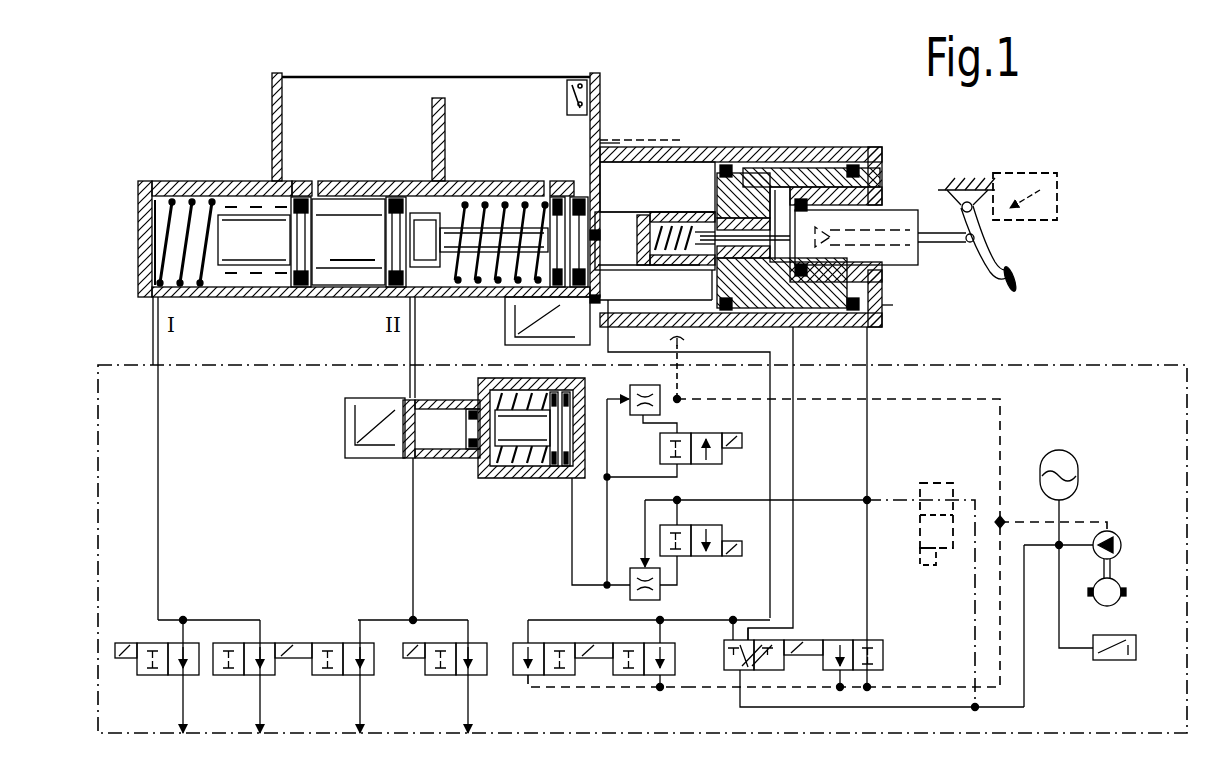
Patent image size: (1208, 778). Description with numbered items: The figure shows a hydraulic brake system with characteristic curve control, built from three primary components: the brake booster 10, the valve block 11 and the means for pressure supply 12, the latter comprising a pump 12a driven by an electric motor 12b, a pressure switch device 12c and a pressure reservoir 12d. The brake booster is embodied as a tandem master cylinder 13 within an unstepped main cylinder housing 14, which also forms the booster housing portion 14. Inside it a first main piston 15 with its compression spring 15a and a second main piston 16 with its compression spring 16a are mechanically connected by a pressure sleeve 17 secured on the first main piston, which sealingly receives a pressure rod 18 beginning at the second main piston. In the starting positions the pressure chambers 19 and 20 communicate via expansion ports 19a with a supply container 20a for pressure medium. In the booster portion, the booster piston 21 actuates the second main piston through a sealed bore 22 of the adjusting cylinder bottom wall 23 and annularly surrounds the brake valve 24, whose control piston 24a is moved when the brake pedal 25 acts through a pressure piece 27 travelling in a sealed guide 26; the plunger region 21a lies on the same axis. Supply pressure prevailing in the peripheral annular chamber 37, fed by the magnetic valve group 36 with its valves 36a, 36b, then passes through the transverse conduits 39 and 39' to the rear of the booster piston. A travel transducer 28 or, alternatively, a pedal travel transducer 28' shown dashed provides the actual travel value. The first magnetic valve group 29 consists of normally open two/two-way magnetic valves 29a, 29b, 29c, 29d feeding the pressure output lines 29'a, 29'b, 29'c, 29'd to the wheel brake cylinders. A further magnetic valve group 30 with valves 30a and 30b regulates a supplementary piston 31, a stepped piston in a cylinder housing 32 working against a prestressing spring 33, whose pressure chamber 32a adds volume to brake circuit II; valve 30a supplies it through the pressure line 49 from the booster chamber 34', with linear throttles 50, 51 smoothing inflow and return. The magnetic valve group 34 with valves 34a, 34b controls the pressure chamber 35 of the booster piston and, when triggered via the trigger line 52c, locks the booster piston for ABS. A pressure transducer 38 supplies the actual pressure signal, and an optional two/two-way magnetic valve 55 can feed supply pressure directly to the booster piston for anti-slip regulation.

The brake booster 10 is at (778, 182).
The valve block 11 is at (136, 362).
The means for pressure supply 12 is at (1097, 564).
The pump 12a is at (1118, 533).
The electric motor 12b is at (1120, 600).
The pressure switch device 12c is at (1118, 665).
The pressure reservoir 12d is at (1058, 460).
The tandem master cylinder 13 is at (453, 123).
The main cylinder housing 14 is at (777, 142).
The first main piston 15 is at (335, 223).
The compression spring 15a is at (210, 222).
The second main piston 16 is at (563, 187).
The compression spring 16a is at (486, 205).
The pressure sleeve 17 is at (428, 213).
The pressure rod 18 is at (526, 236).
The pressure chamber 19 is at (165, 213).
The expansion ports 19a is at (320, 187).
The pressure chamber 20 is at (508, 200).
The supply container 20a is at (357, 105).
The booster piston 21 is at (840, 173).
The plunger 21a is at (633, 223).
The sealed bore 22 is at (630, 220).
The adjusting cylinder bottom wall 23 is at (607, 193).
The brake valve 24 is at (753, 170).
The control piston 24a is at (812, 168).
The brake pedal 25 is at (982, 265).
The sealed guide 26 is at (826, 193).
The pressure piece 27 is at (897, 222).
The travel transducer 28 is at (530, 321).
The pedal travel transducer 28' is at (1025, 160).
The first magnetic valve group 29 is at (318, 663).
The 2/2-way magnetic valve 29a is at (155, 643).
The 2/2-way magnetic valve 29b is at (236, 643).
The 2/2-way magnetic valve 29c is at (340, 643).
The 2/2-way magnetic valve 29d is at (447, 643).
The pressure output line 29'a is at (154, 676).
The pressure output line 29'b is at (232, 676).
The pressure output line 29'c is at (389, 676).
The pressure output line 29'd is at (500, 676).
The magnetic valve group 30 is at (687, 502).
The magnetic valve 30a is at (700, 557).
The magnetic valve 30b is at (699, 433).
The supplementary piston 31 is at (500, 440).
The cylinder housing 32 is at (461, 458).
The pressure chamber 32a is at (476, 400).
The prestressing spring 33 is at (517, 454).
The magnetic valve group 34 is at (625, 671).
The 2/2-way magnetic valve 34a is at (520, 655).
The 2/2-way magnetic valve 34b is at (679, 633).
The booster chamber 34' is at (909, 303).
The pressure chamber 35 is at (687, 180).
The magnetic valve group 36 is at (874, 635).
The 2/2-way magnetic valve 36a is at (784, 640).
The 2/2-way magnetic valve 36b is at (880, 640).
The peripheral annular chamber 37 is at (806, 328).
The pressure transducer 38 is at (346, 432).
The transverse conduit 39 is at (743, 167).
The transverse conduit 39' is at (760, 170).
The pressure line 49 is at (813, 500).
The linear throttle 50 is at (633, 568).
The linear throttle 51 is at (630, 393).
The trigger line 52c is at (591, 662).
The 2/2-way magnetic valve 55 is at (928, 490).